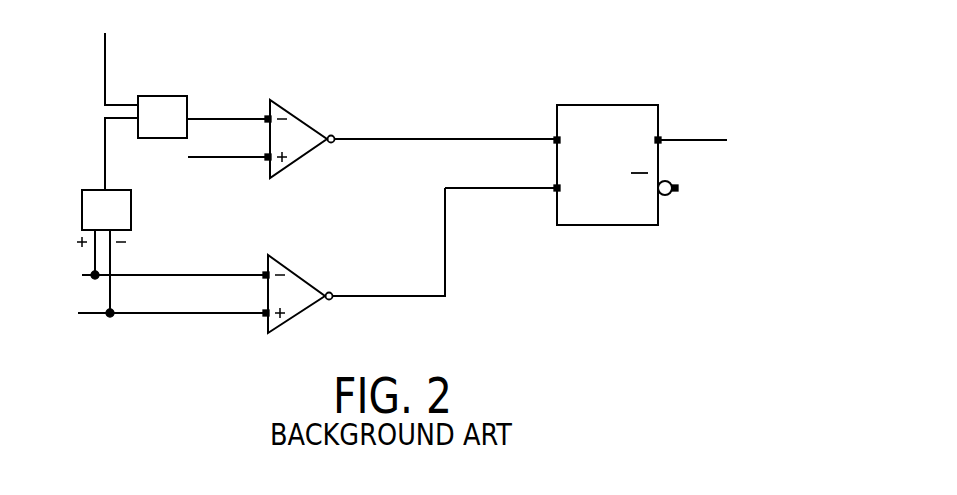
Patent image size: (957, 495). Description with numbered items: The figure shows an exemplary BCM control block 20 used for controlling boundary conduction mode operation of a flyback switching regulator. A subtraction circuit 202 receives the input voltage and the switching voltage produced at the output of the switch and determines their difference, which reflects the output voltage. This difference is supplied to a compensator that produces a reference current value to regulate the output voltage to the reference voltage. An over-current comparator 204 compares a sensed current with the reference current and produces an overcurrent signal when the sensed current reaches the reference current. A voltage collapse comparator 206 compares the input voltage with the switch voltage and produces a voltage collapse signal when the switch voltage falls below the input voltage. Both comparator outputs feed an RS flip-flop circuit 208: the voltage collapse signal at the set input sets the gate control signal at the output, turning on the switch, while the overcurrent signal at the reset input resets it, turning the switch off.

The BCM control block 20 is at (595, 60).
The subtraction circuit 202 is at (131, 212).
The over-current (OC) comparator 204 is at (300, 158).
The voltage collapse (VC) comparator 206 is at (308, 283).
The RS flip-flop circuit 208 is at (607, 225).